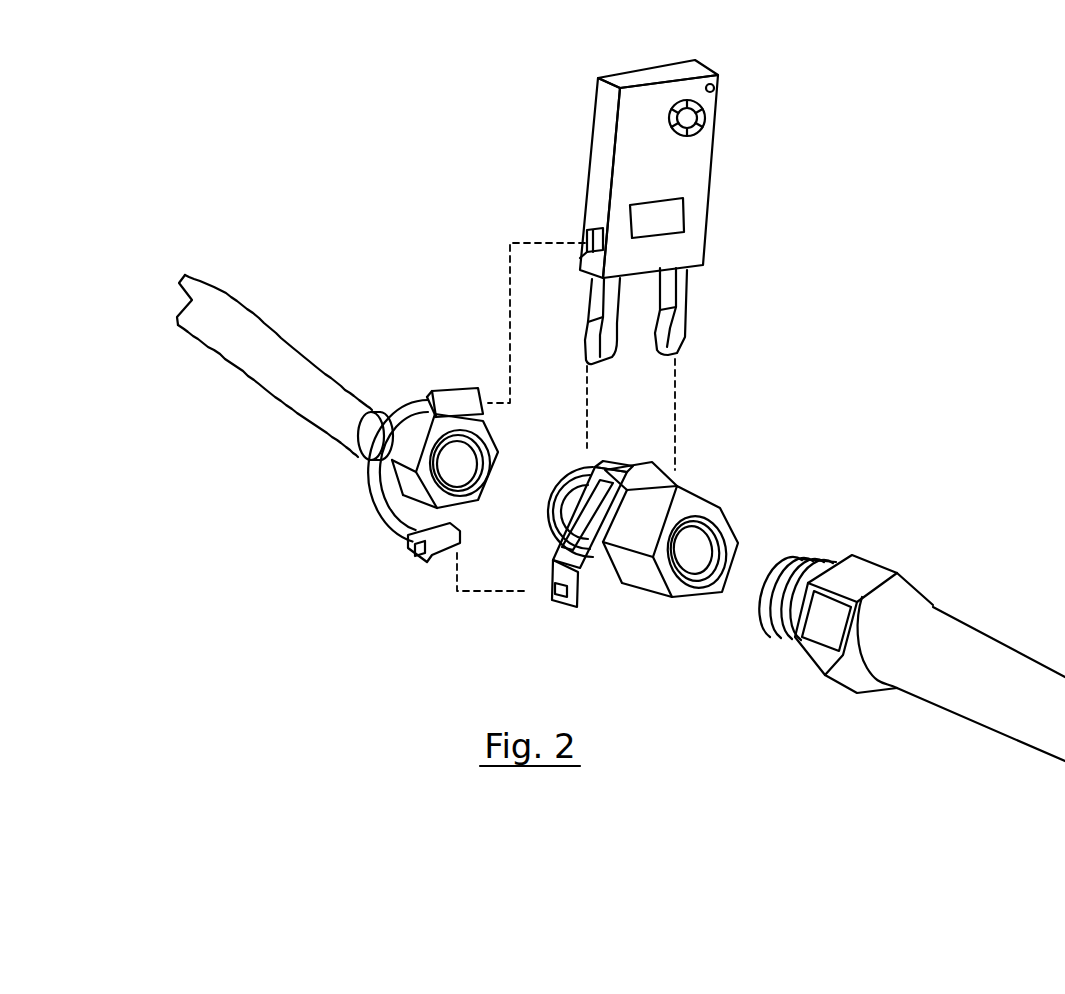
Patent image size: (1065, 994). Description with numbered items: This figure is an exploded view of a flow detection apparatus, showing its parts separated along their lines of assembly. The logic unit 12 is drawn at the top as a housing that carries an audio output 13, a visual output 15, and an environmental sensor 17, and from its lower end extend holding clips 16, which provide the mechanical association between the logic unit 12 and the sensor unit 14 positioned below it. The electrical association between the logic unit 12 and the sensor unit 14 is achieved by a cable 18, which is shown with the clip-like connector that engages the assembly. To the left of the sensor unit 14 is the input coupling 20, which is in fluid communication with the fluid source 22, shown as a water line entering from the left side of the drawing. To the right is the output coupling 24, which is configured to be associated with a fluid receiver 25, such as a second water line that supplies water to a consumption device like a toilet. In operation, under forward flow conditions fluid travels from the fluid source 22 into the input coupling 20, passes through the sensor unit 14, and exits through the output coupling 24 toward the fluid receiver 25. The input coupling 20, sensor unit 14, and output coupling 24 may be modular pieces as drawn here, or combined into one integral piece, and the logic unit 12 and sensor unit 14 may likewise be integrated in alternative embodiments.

The logic unit 12 is at (600, 133).
The audio output 13 is at (705, 118).
The sensor unit 14 is at (597, 589).
The visual output 15 is at (716, 88).
The holding clips 16 is at (687, 325).
The environmental sensor 17 is at (667, 222).
The cable 18 is at (370, 493).
The input coupling 20 is at (538, 490).
The fluid source 22 is at (245, 357).
The output coupling 24 is at (727, 505).
The fluid receiver 25 is at (873, 580).